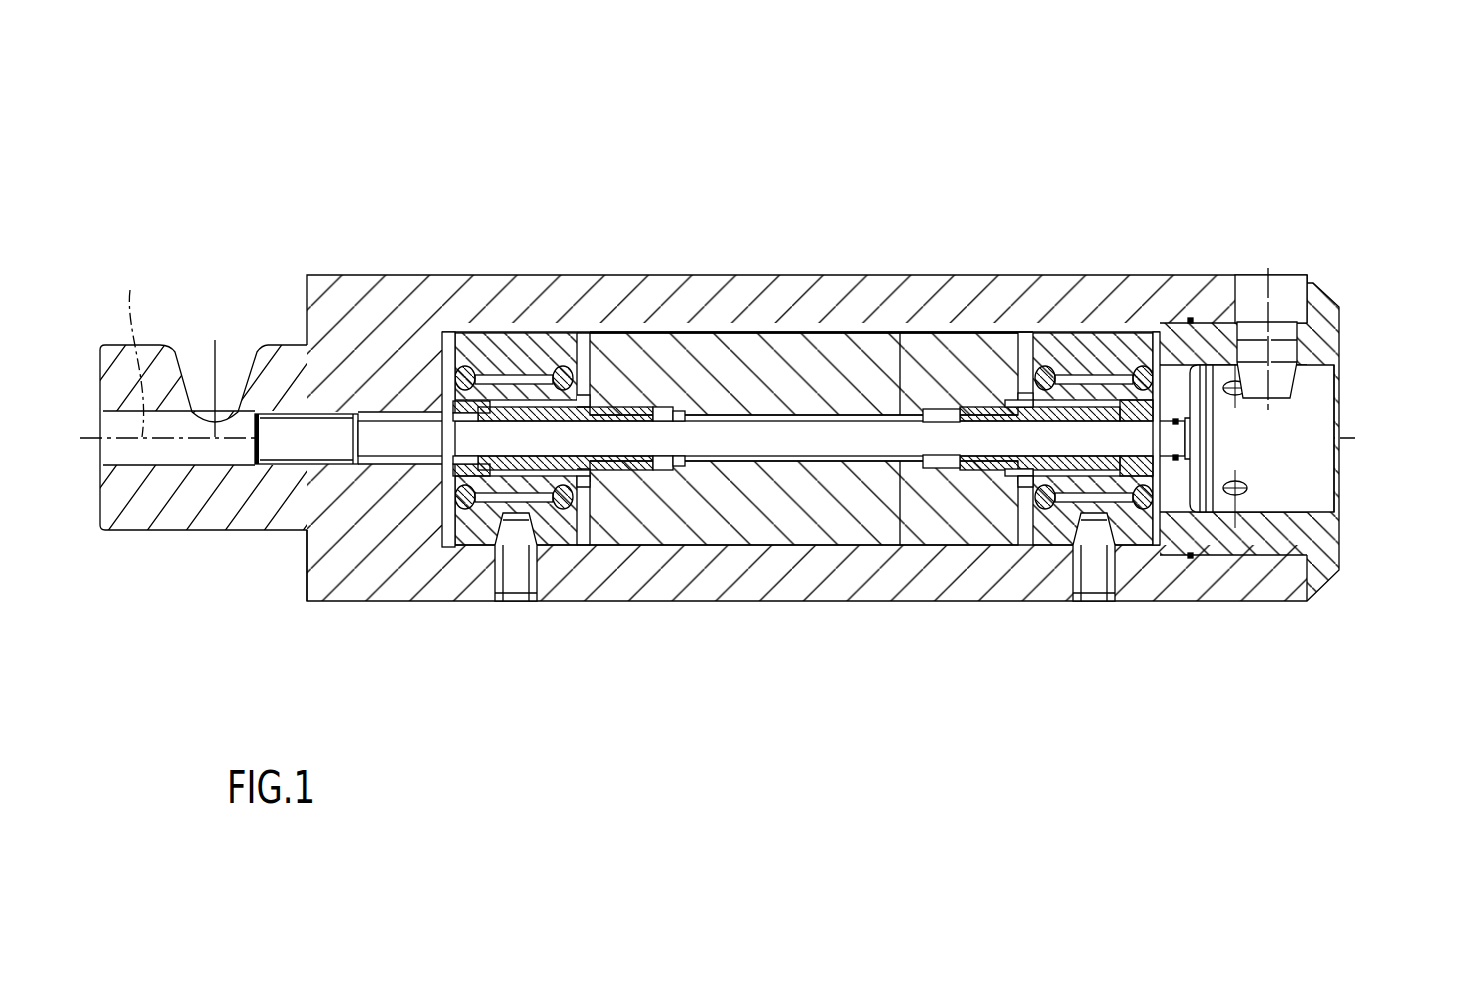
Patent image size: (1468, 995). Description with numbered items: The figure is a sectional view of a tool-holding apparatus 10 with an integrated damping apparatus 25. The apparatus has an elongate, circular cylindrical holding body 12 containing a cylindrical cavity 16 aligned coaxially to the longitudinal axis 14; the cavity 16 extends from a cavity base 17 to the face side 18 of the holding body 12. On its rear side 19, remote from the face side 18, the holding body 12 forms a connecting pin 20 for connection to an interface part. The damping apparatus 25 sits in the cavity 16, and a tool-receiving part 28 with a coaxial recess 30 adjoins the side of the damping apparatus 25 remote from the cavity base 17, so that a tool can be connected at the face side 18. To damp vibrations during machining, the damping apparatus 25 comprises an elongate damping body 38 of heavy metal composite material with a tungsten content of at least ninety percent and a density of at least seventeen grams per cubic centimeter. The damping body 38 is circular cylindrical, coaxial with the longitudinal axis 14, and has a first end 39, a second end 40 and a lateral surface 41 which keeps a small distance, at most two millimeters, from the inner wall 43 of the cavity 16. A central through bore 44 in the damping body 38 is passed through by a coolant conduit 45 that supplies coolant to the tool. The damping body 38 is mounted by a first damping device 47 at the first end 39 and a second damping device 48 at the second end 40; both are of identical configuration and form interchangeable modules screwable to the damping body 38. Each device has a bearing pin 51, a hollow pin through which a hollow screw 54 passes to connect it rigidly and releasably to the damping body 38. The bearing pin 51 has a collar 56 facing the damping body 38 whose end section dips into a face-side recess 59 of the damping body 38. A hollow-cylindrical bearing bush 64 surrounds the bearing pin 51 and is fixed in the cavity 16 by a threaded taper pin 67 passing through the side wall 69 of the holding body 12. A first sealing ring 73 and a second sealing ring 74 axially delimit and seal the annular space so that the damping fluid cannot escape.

The tool-holding apparatus 10 is at (830, 198).
The holding body 12 is at (368, 276).
The longitudinal axis 14 is at (717, 344).
The cylindrical cavity 16 is at (447, 333).
The cavity base 17 is at (448, 357).
The face side 18 is at (1315, 292).
The rear side 19 is at (307, 569).
The connecting pin 20 is at (183, 515).
The damping apparatus 25 is at (715, 327).
The tool-receiving part 28 is at (1350, 347).
The recess 30 is at (1340, 378).
The damping body 38 is at (666, 350).
The first end 39 is at (1021, 386).
The second end 40 is at (598, 402).
The lateral surface 41 is at (750, 318).
The inner wall 43 is at (826, 340).
The central through bore 44 is at (884, 427).
The coolant conduit 45 is at (780, 430).
The first damping device 47 is at (1095, 312).
The second damping device 48 is at (475, 548).
The bearing pin 51 is at (585, 490).
The hollow screw 54 is at (447, 485).
The collar 56 is at (1010, 478).
The face-side recess 59 is at (1022, 385).
The bearing bush 64 is at (518, 345).
The threaded taper pin 67 is at (1103, 582).
The side wall 69 is at (1040, 588).
The first sealing ring 73 is at (467, 509).
The second sealing ring 74 is at (1046, 374).